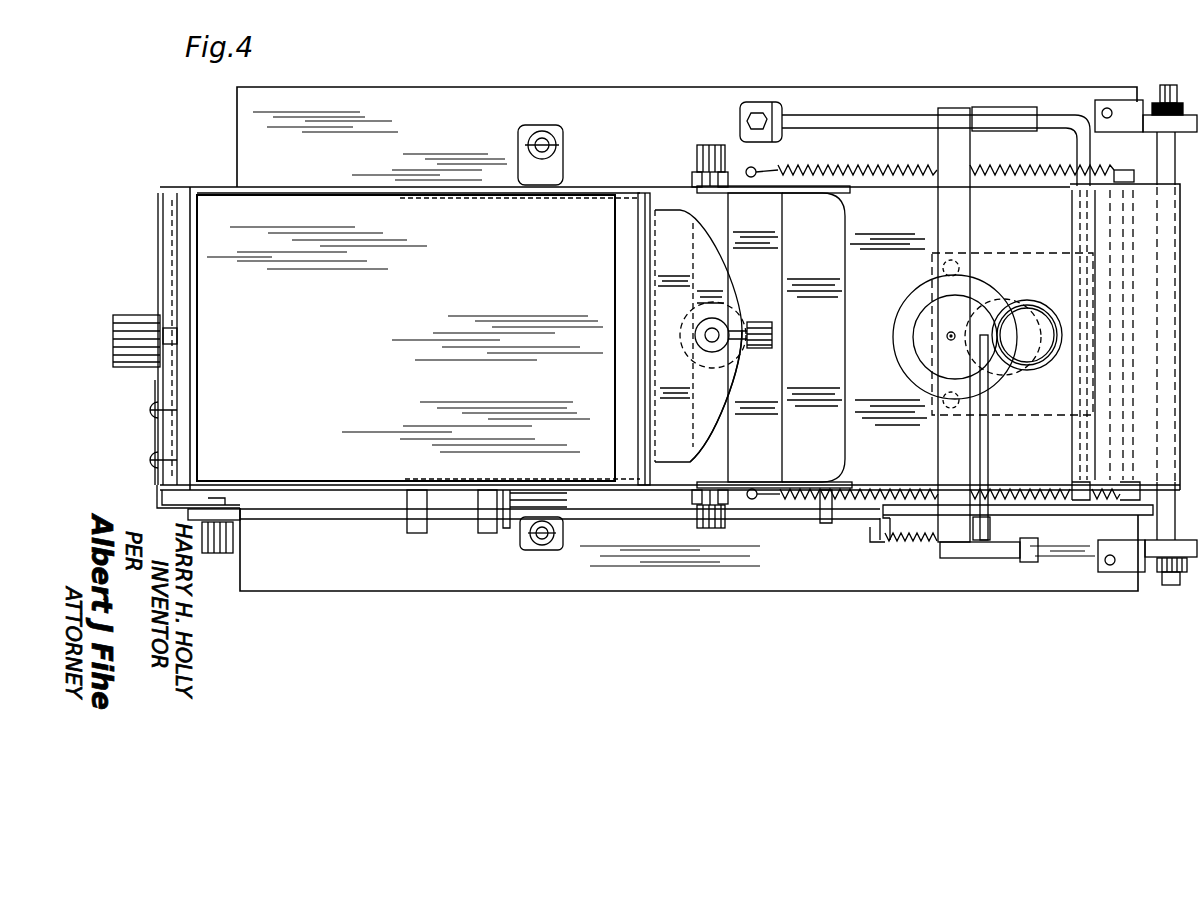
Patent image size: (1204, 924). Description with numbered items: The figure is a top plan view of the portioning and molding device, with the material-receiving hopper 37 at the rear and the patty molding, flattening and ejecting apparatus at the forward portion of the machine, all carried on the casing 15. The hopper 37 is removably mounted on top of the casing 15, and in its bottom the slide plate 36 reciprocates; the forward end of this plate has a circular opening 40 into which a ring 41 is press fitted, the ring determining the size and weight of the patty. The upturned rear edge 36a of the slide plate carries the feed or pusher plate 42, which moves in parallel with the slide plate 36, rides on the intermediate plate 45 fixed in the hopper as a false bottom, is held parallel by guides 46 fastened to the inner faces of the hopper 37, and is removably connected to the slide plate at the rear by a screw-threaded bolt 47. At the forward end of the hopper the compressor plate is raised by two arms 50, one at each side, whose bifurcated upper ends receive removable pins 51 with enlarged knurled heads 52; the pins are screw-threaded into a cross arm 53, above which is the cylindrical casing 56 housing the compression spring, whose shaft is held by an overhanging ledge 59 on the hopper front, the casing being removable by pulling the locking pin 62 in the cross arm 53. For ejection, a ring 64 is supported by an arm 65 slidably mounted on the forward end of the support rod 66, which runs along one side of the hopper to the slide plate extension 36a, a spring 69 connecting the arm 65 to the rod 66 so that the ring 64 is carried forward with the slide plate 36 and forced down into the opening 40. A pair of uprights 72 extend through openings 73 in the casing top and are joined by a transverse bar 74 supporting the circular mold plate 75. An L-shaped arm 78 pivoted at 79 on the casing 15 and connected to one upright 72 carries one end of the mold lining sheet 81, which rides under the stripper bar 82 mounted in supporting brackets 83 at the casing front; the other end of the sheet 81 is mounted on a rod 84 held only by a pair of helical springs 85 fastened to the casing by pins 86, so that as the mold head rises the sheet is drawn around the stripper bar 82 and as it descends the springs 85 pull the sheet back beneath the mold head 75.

The casing 15 is at (482, 99).
The slide plate 36 is at (1092, 188).
The upturned rear edge of slide plate 36a is at (157, 262).
The hopper 37 is at (205, 192).
The opening 40 is at (1027, 356).
The ring 41 is at (1017, 295).
The feed or pusher plate 42 is at (176, 193).
The intermediate plate 45 is at (626, 208).
The guides 46 is at (478, 196).
The screw-threaded bolt 47 is at (137, 370).
The arms 50 is at (694, 493).
The removable pins 51 is at (728, 176).
The knurled heads 52 is at (709, 145).
The cross arm 53 is at (711, 437).
The cylindrical casing 56 is at (740, 328).
The overhanging ledge 59 is at (673, 233).
The locking pin 62 is at (786, 337).
The ring 64 is at (1027, 335).
The arm 65 is at (984, 459).
The support rod 66 is at (387, 514).
The spring 69 is at (912, 540).
The uprights 72 is at (990, 554).
The openings 73 is at (1028, 554).
The transverse bar 74 is at (947, 230).
The mold plate 75 is at (906, 325).
The L-shaped arm 78 is at (898, 122).
The pivot 79 is at (776, 112).
The mold lining sheet 81 is at (1147, 202).
The stripper bar 82 is at (1165, 97).
The supporting brackets 83 is at (1147, 550).
The rod 84 is at (1132, 489).
The helical springs 85 is at (879, 170).
The pins 86 is at (752, 178).